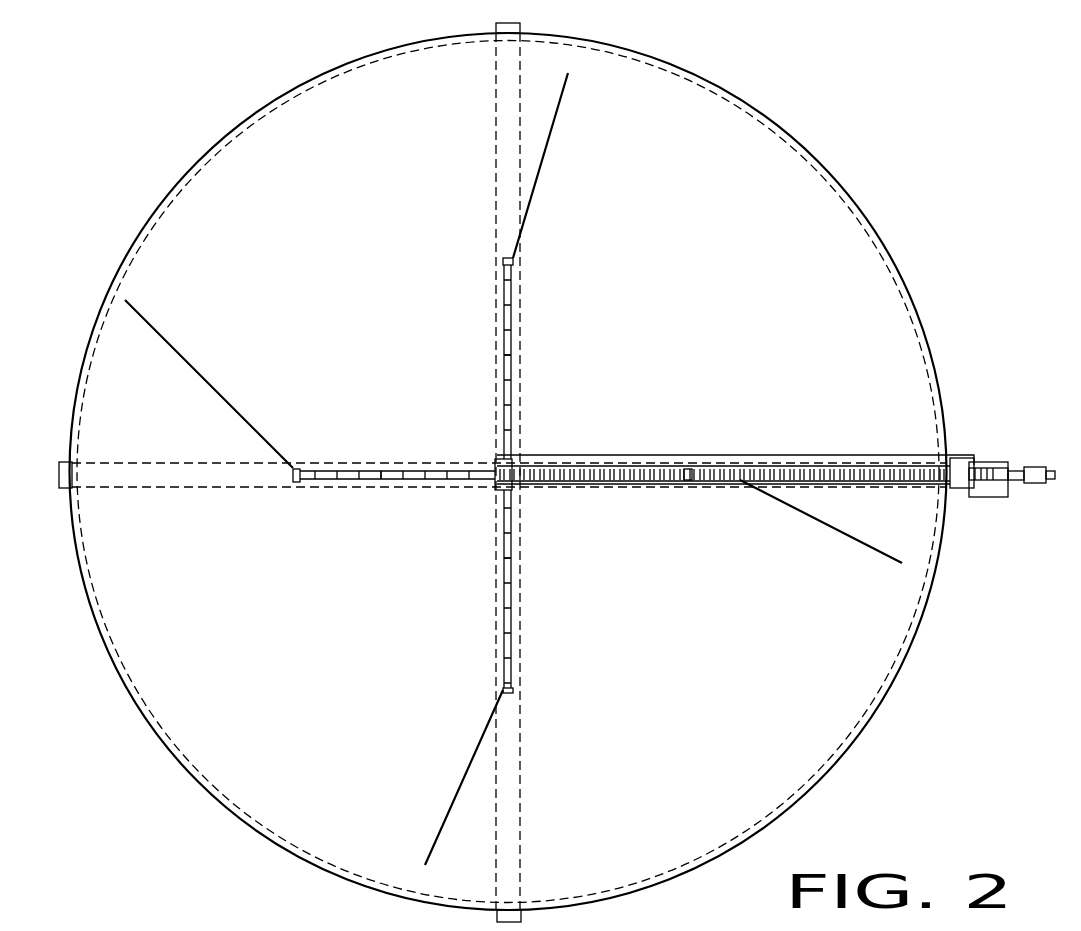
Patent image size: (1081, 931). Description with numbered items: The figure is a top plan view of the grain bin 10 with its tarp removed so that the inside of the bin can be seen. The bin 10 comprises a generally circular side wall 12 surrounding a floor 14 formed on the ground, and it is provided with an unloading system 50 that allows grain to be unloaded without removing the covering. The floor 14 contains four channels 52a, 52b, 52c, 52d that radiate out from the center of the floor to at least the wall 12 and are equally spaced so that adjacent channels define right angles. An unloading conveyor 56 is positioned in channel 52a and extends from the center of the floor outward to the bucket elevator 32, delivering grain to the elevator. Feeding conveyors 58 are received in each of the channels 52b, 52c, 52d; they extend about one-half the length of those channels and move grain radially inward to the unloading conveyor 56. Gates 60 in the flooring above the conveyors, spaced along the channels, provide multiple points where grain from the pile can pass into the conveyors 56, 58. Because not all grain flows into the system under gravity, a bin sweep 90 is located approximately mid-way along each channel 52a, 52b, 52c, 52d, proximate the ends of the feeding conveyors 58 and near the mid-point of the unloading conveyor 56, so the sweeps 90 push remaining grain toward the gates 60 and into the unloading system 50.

The grain bin 10 is at (892, 186).
The side wall 12 is at (892, 693).
The floor 14 is at (733, 687).
The bucket elevator 32 is at (988, 497).
The unloading system 50 is at (551, 494).
The channel 52a is at (735, 467).
The channel 52b is at (528, 317).
The channel 52c is at (345, 464).
The channel 52d is at (520, 606).
The unloading conveyor 56 is at (643, 485).
The feeding conveyors 58 is at (518, 380).
The gates 60 is at (527, 246).
The bin sweep 90 is at (548, 142).